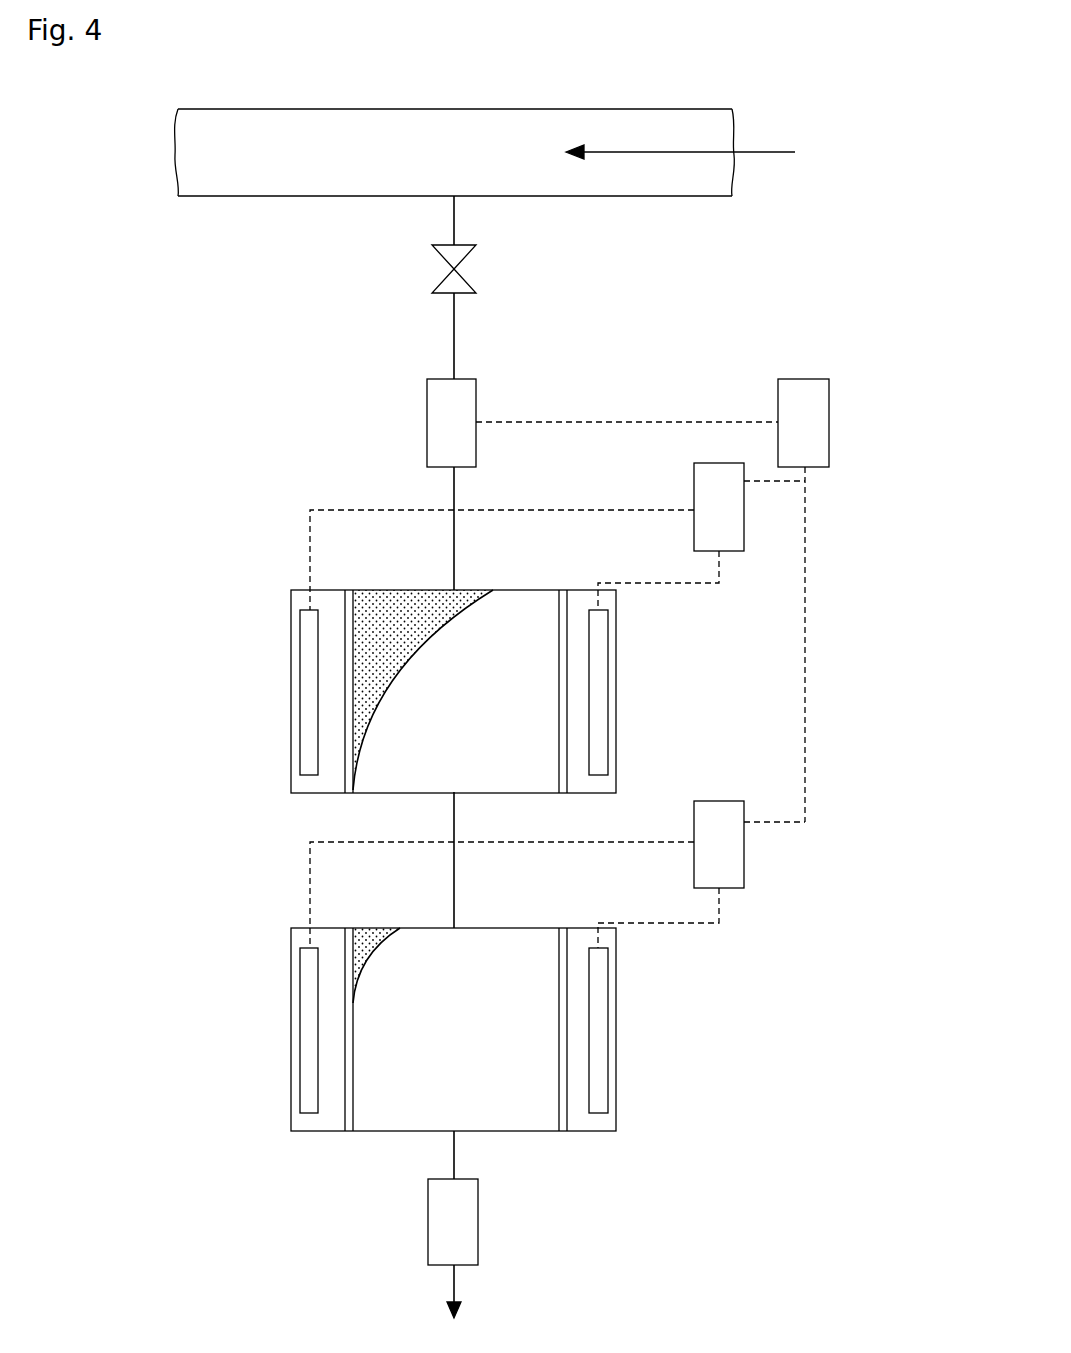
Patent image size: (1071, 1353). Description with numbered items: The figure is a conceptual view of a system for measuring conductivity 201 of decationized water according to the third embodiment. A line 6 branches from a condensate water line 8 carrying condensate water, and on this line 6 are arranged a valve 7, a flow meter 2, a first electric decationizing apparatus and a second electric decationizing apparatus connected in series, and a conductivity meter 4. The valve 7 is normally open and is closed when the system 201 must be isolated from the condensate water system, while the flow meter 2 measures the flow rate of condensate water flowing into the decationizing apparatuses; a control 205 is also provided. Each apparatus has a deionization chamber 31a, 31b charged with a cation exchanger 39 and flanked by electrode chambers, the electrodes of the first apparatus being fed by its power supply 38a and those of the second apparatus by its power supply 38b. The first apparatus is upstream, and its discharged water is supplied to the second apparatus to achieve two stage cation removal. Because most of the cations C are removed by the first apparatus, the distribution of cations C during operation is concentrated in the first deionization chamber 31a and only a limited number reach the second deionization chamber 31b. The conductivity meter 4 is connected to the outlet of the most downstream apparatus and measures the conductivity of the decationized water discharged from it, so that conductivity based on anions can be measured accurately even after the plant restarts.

The system for measuring conductivity 201 is at (178, 416).
The condensate water line 8 is at (271, 186).
The valve 7 is at (456, 270).
The line 6 is at (455, 327).
The flow meter 2 is at (466, 391).
The control 205 is at (829, 425).
The power supply 38a is at (733, 510).
The power supply 38b is at (733, 838).
The first electrodeionization cell 31a is at (530, 604).
The second electrodeionization cell 31b is at (527, 940).
The cation exchanger 39 is at (456, 861).
The cations C is at (410, 637).
The conductivity meter 4 is at (472, 1233).